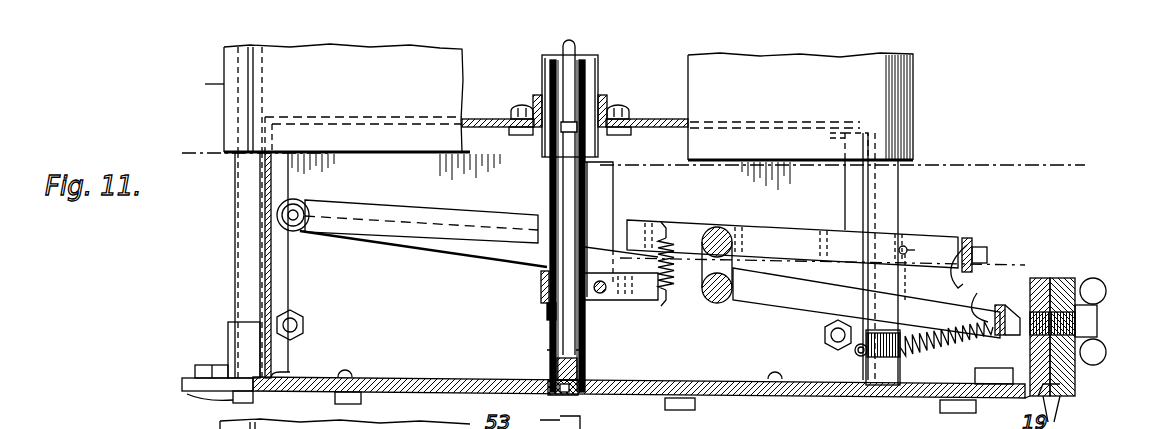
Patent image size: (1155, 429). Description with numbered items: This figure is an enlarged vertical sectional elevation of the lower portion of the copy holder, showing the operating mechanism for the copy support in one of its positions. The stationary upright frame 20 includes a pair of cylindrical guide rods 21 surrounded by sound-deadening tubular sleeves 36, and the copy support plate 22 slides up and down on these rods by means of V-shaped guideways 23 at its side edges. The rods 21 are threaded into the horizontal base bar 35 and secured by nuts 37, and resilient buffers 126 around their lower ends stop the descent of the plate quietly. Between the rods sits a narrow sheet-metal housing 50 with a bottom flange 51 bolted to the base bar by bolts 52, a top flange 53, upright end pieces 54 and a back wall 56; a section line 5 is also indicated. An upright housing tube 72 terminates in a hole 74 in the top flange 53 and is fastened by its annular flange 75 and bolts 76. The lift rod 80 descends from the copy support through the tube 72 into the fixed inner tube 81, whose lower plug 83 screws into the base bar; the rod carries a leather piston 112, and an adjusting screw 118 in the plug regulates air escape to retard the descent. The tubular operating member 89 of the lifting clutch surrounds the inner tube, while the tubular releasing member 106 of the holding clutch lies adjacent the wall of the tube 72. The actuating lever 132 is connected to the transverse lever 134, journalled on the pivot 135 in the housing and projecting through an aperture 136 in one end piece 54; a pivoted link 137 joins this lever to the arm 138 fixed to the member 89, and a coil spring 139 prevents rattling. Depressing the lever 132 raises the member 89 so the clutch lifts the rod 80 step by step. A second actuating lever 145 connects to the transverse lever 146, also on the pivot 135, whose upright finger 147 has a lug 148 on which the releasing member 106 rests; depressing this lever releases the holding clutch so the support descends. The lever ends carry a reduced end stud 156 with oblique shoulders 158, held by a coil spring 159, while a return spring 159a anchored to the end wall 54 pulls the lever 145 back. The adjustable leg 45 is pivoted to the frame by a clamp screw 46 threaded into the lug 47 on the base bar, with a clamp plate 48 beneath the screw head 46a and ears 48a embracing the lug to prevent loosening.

The section line 5 is at (624, 164).
The stationary upright frame 20 is at (210, 215).
The guide rods 21 is at (248, 255).
The copy support plate 22 is at (362, 112).
The guideways 23 is at (920, 93).
The base bar 35 is at (190, 378).
The tubular sleeves 36 is at (238, 182).
The nuts 37 is at (255, 400).
The adjustable leg 45 is at (1062, 278).
The clamp screw 46 is at (1072, 292).
The head of clamp screw 46a is at (1096, 312).
The lug 47 is at (1040, 278).
The clamp plate 48 is at (1068, 381).
The ears of clamp plate 48a is at (1062, 397).
The housing 50 is at (266, 292).
The bottom flange 51 is at (462, 378).
The bolts 52 is at (348, 372).
The top flange 53 is at (479, 118).
The end pieces 54 is at (272, 275).
The back wall 56 is at (479, 260).
The housing tube 72 is at (598, 64).
The hole 74 is at (540, 133).
The annular flange 75 is at (630, 120).
The bolts 76 is at (607, 110).
The lift rod 80 is at (562, 48).
The inner tube 81 is at (549, 352).
The plug 83 is at (579, 380).
The operating member 89 is at (550, 200).
The releasing member 106 is at (540, 160).
The piston 112 is at (586, 192).
The adjusting screw 118 is at (576, 350).
The resilient buffers 126 is at (228, 337).
The actuating lever 132 is at (965, 240).
The transverse lever 134 is at (797, 233).
The pivot 135 is at (304, 208).
The aperture 136 is at (868, 180).
The pivoted link 137 is at (822, 270).
The arm 138 is at (702, 302).
The coil spring 139 is at (692, 232).
The actuating lever 145 is at (990, 332).
The transverse lever 146 is at (866, 303).
The upright finger 147 is at (605, 182).
The lug 148 is at (598, 166).
The end stud 156 is at (985, 248).
The oblique shoulders 158 is at (986, 318).
The coil spring 159 is at (912, 273).
The return spring 159a is at (945, 329).